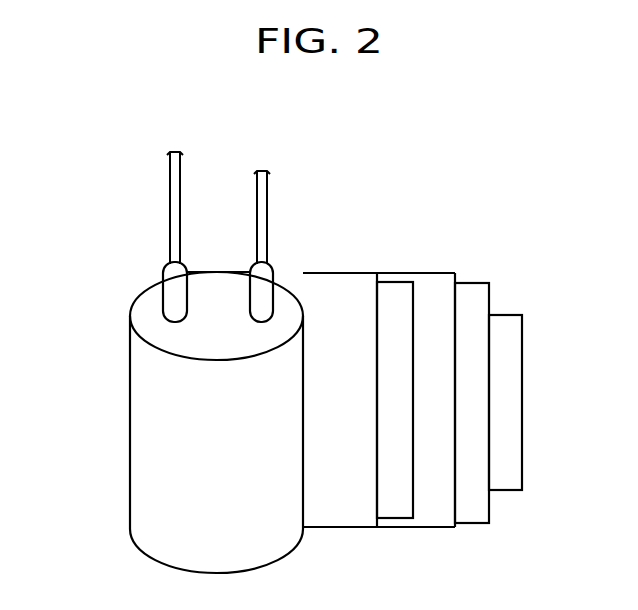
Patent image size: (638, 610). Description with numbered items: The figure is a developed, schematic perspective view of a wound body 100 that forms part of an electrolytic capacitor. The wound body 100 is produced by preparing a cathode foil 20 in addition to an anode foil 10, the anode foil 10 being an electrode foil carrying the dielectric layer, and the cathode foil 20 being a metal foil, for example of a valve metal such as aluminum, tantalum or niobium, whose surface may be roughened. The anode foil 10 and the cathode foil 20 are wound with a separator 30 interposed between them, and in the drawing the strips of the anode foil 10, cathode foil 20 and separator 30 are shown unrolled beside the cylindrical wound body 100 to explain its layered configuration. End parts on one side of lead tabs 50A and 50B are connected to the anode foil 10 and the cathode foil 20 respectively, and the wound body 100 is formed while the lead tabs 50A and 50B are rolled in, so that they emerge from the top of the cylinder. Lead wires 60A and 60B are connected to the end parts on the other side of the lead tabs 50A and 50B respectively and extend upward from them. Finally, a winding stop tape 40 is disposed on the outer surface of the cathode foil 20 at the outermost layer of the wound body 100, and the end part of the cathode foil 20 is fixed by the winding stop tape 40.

The wound body 100 is at (373, 160).
The lead wire 60A is at (170, 188).
The lead wire 60B is at (267, 178).
The lead tab 50A is at (170, 277).
The lead tab 50B is at (267, 280).
The separator 30 is at (350, 502).
The anode foil 10 is at (402, 503).
The cathode foil 20 is at (474, 512).
The winding stop tape 40 is at (505, 478).